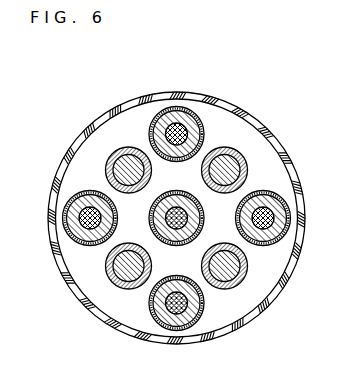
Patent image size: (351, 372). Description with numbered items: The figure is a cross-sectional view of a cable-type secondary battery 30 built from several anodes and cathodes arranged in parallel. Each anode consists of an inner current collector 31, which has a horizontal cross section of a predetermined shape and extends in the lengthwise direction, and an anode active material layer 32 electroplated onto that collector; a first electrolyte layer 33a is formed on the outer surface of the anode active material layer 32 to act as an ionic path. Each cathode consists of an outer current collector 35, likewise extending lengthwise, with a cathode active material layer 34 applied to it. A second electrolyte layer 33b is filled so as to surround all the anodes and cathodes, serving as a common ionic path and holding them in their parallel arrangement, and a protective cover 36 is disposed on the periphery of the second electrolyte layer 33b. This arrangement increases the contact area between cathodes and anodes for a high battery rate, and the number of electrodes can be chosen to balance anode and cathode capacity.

The cable-type secondary battery 30 is at (64, 102).
The inner current collector 31 is at (173, 128).
The anode active material layer 32 is at (179, 118).
The first electrolyte layer 33a is at (194, 113).
The second electrolyte layer 33b is at (263, 142).
The cathode active material layer 34 is at (117, 152).
The outer current collector 35 is at (117, 155).
The protective cover 36 is at (257, 123).